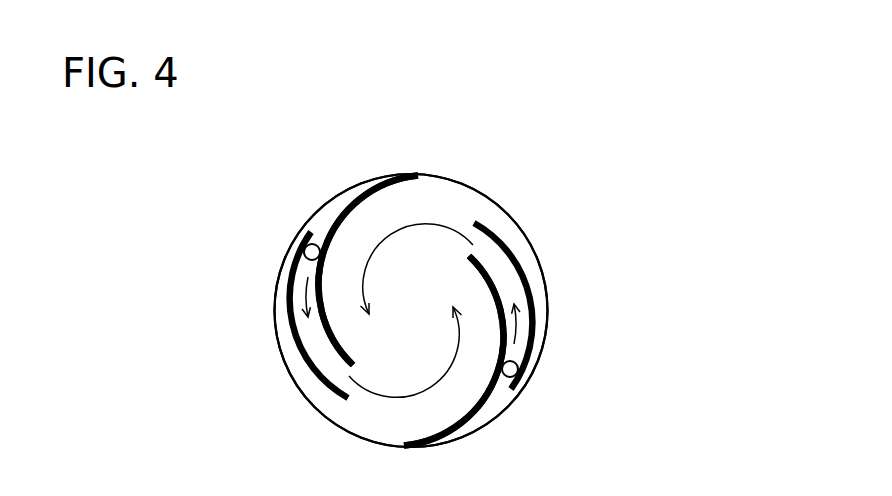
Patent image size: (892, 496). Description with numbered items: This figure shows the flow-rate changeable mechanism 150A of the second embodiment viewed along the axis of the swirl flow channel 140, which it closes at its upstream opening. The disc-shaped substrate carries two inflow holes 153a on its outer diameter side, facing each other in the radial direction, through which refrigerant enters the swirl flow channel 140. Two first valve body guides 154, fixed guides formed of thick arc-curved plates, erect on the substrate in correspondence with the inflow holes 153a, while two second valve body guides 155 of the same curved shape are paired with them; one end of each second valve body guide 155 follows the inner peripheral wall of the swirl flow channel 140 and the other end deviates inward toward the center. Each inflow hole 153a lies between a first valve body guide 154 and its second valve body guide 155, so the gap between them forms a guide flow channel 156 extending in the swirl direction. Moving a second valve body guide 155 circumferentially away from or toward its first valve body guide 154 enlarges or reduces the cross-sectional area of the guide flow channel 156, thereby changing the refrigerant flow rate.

The swirl flow channel 140 is at (390, 218).
The flow-rate changeable mechanism 150A is at (490, 182).
The inflow holes 153a is at (313, 244).
The first valve body guides 154 is at (330, 328).
The second valve body guides 155 is at (320, 376).
The guide flow channel 156 is at (322, 360).